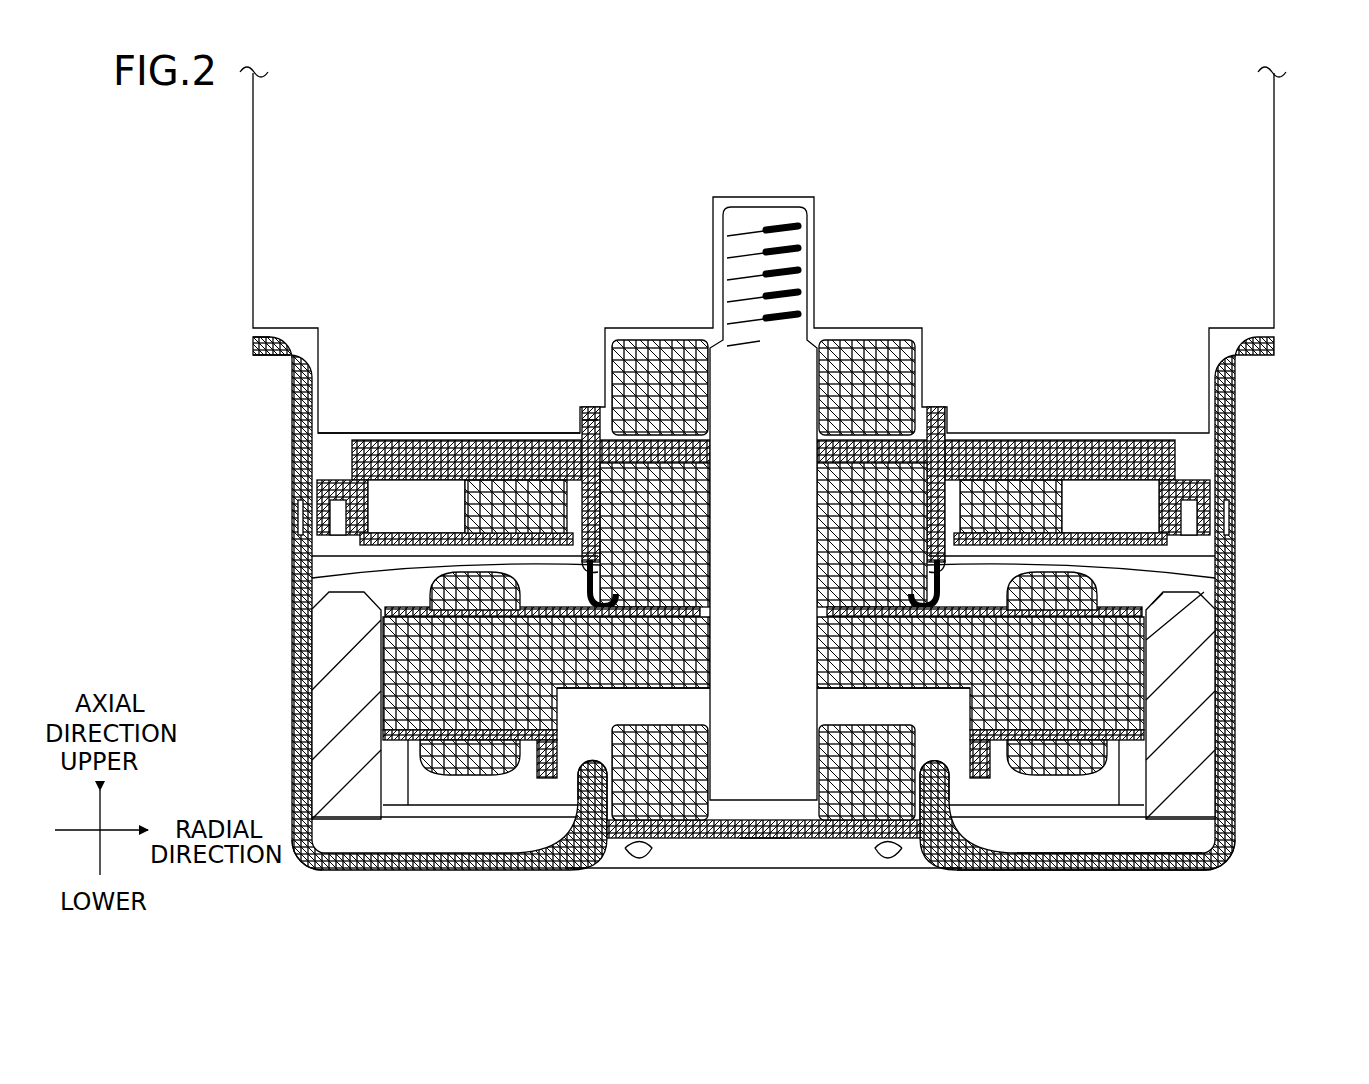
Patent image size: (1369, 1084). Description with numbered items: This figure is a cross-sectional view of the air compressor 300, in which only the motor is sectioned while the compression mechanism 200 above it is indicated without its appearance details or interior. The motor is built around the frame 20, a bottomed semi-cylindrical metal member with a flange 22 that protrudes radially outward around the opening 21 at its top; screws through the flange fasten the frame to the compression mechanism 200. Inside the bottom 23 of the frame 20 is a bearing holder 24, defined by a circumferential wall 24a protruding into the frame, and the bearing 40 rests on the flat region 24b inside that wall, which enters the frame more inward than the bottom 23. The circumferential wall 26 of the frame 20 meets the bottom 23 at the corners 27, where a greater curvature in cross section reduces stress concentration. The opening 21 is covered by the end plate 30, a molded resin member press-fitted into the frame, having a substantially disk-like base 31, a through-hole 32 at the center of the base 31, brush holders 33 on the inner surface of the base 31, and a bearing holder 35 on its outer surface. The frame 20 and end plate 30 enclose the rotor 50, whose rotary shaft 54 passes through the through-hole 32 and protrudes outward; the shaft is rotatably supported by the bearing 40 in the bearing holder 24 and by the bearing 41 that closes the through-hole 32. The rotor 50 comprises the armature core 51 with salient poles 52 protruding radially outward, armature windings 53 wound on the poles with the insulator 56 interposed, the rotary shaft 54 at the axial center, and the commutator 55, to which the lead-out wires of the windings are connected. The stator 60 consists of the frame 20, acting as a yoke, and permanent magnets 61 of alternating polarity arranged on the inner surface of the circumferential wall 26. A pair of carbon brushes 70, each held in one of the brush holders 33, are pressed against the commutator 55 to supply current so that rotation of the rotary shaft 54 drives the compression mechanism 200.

The air compressor 300 is at (190, 180).
The compression mechanism 200 is at (1178, 190).
The frame 20 is at (774, 643).
The opening 21 is at (410, 420).
The flange 22 is at (265, 360).
The bottom 23 is at (1068, 878).
The bearing holder 24 is at (743, 840).
The circumferential wall 24a is at (592, 870).
The flat region 24b is at (780, 840).
The circumferential wall 26 is at (1228, 570).
The corners 27 is at (304, 863).
The end plate 30 is at (763, 431).
The base 31 is at (1013, 460).
The through-hole 32 is at (823, 425).
The brush holders 33 is at (1110, 530).
The bearing holder 35 is at (595, 420).
The bearing 40 is at (852, 800).
The bearing 41 is at (648, 360).
The rotor 50 is at (688, 640).
The armature core 51 is at (605, 660).
The salient poles 52 is at (410, 632).
The armature windings 53 is at (400, 605).
The rotary shaft 54 is at (745, 553).
The commutator 55 is at (622, 572).
The insulator 56 is at (530, 770).
The stator 60 is at (831, 705).
The permanent magnets 61 is at (1205, 730).
The brushes 70 is at (505, 495).